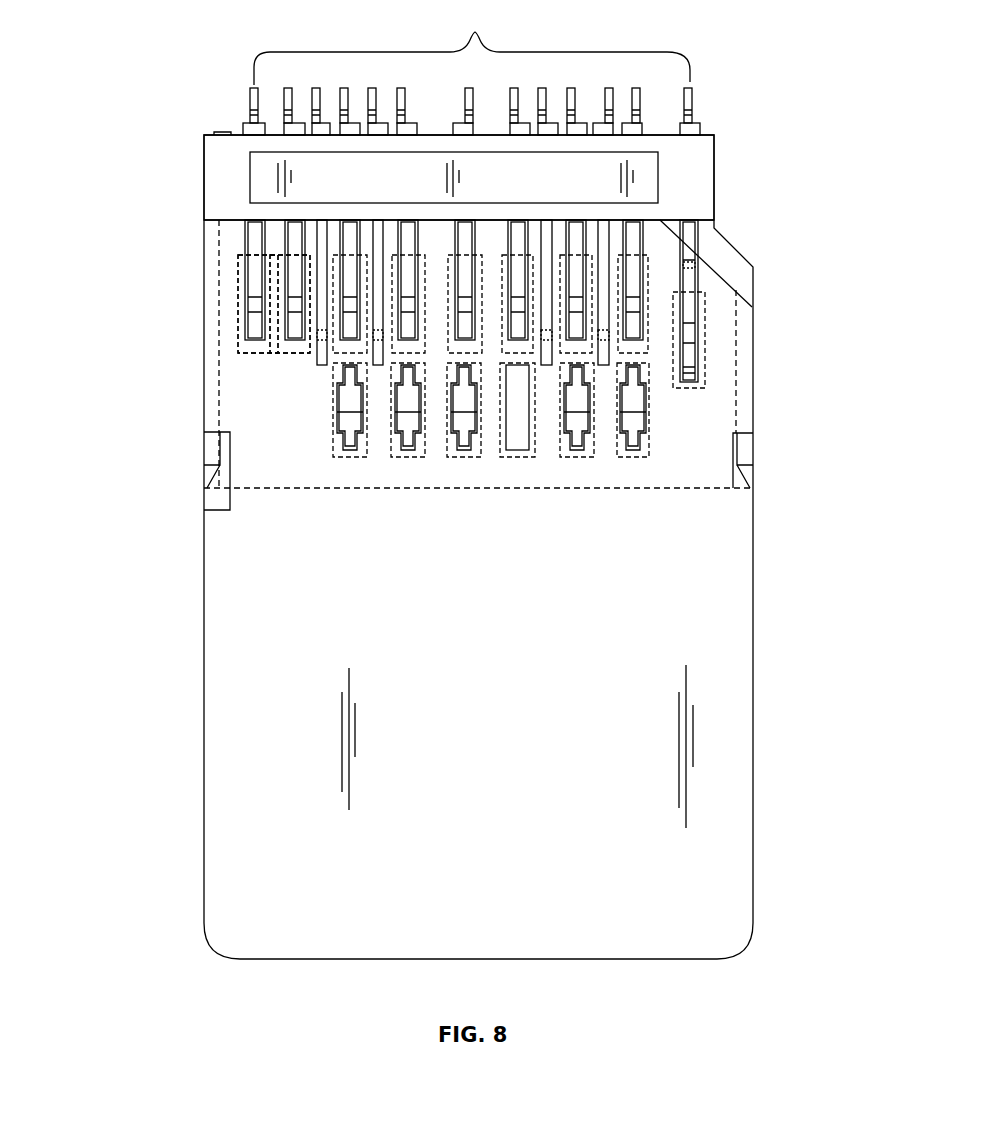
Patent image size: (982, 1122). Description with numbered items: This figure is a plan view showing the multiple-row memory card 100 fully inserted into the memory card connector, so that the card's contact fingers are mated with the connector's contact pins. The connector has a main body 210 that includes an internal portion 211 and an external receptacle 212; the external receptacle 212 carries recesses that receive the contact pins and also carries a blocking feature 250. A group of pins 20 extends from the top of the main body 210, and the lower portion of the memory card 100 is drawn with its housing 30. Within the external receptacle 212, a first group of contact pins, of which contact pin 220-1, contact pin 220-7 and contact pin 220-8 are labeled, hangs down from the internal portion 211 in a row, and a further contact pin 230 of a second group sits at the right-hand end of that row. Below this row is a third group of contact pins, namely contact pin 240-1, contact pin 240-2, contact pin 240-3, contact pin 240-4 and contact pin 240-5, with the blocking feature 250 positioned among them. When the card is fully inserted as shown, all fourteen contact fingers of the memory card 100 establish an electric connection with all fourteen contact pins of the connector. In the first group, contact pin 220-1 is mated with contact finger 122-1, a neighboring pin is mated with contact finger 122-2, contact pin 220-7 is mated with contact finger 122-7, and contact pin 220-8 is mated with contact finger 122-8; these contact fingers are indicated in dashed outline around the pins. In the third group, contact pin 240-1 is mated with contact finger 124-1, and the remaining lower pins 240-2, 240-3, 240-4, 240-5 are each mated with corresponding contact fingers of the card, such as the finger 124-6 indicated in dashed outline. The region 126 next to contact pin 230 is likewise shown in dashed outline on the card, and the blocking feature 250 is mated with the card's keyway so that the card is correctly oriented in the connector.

The signal pins 20 is at (471, 68).
The housing 30 is at (745, 713).
The memory card 100 is at (728, 607).
The main body 210 is at (155, 143).
The internal portion 211 is at (213, 198).
The external receptacle 212 is at (203, 363).
The contact pin 220-1 is at (643, 240).
The contact pin 220-7 is at (292, 232).
The contact pin 220-8 is at (252, 290).
The contact finger 122-1 is at (650, 312).
The contact finger 122-2 is at (600, 300).
The contact finger 122-7 is at (302, 345).
The contact finger 122-8 is at (255, 353).
The contact finger 124-1 is at (650, 445).
The sixth lower contact slot 124-6 is at (333, 400).
The ground contact slot 126 is at (703, 333).
The contact pin 230 is at (691, 353).
The contact pin 240-1 is at (633, 445).
The contact pin 240-2 is at (577, 445).
The contact pin 240-3 is at (464, 445).
The contact pin 240-4 is at (408, 445).
The contact pin 240-5 is at (349, 445).
The blocking feature 250 is at (519, 437).